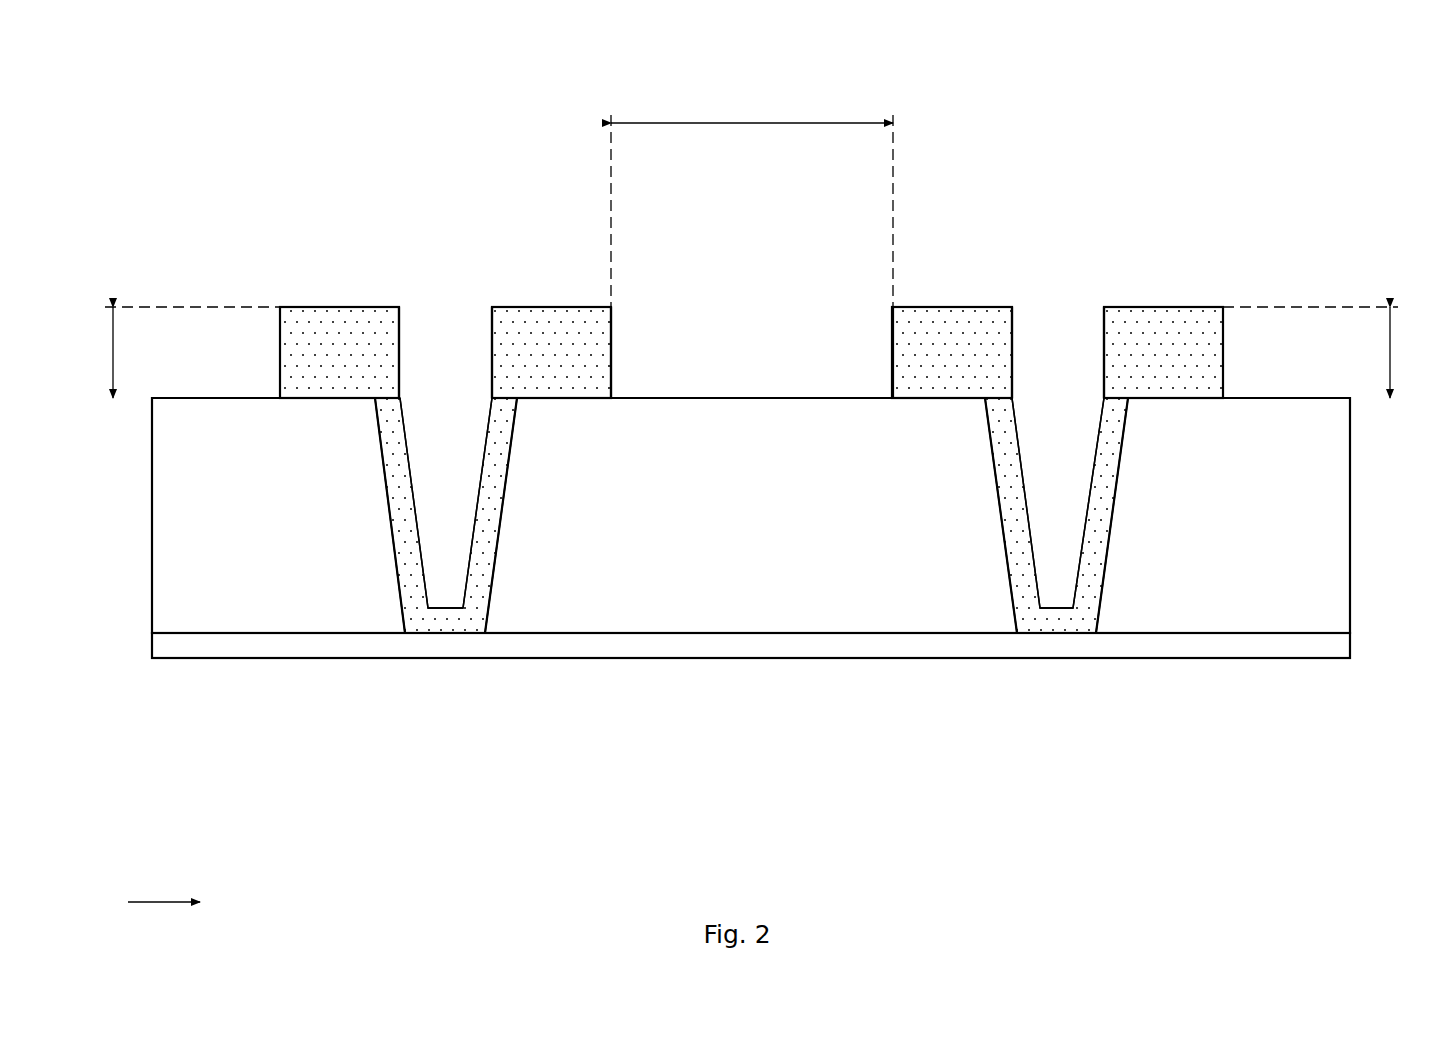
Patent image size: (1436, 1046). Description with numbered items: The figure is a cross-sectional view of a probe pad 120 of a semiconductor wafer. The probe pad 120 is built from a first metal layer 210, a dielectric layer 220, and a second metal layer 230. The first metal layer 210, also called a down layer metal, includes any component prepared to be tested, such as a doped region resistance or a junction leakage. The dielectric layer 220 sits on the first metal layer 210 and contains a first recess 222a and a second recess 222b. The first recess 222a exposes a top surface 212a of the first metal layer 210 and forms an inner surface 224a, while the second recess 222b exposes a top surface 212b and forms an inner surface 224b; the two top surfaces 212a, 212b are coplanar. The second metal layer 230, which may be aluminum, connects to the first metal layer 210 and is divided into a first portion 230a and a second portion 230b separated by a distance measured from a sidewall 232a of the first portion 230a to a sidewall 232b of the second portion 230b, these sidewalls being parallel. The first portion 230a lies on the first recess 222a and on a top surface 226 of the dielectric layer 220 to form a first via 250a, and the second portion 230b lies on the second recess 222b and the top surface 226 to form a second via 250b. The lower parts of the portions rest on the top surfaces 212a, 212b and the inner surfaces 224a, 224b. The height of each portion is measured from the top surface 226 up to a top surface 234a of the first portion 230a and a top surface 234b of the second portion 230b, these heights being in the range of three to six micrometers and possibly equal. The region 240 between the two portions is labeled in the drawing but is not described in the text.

The probe pad 120 is at (112, 74).
The first metal layer 210 is at (1343, 647).
The dielectric layer 220 is at (1343, 515).
The first recess 222a is at (440, 428).
The second recess 222b is at (1058, 428).
The inner surface 224a is at (497, 500).
The inner surface 224b is at (1013, 500).
The top surface 226 is at (737, 398).
The second metal layer 230 is at (1287, 83).
The first portion 230a is at (451, 483).
The second portion 230b is at (1054, 483).
The sidewall 232a is at (614, 373).
The sidewall 232b is at (890, 373).
The top surface 234a is at (341, 307).
The top surface 234b is at (1165, 307).
The gap between conductive features 240 is at (752, 296).
The first via 250a is at (445, 308).
The second via 250b is at (1056, 308).
The top surface 212a is at (440, 618).
The top surface 212b is at (1060, 618).